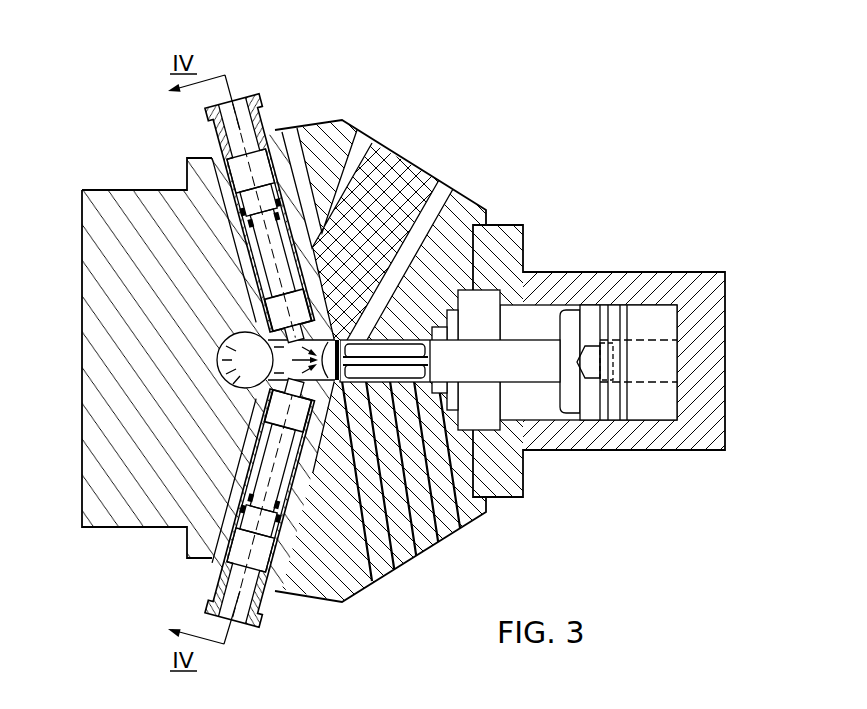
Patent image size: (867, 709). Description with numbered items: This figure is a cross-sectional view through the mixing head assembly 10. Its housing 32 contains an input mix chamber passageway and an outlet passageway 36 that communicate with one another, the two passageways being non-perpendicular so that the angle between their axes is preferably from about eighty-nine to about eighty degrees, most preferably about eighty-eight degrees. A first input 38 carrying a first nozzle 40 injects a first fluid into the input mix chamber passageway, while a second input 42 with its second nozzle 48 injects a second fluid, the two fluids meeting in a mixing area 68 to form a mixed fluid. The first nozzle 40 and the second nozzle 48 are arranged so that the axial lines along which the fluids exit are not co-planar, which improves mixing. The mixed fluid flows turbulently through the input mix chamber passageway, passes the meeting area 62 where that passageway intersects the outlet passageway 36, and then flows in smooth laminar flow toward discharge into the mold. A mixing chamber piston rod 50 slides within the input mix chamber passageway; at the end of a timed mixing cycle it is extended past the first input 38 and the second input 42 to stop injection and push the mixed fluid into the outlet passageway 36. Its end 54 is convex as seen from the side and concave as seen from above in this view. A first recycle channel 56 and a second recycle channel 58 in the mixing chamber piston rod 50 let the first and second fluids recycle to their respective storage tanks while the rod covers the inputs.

The pump unit 10 is at (608, 138).
The housing 32 is at (398, 150).
The output passageway 36 is at (240, 355).
The first input 38 is at (390, 347).
The first nozzle 40 is at (212, 248).
The second input 42 is at (328, 405).
The second nozzle 48 is at (186, 583).
The mixing chamber piston rod 50 is at (537, 372).
The end 54 is at (441, 488).
The first recycle channel 56 is at (393, 340).
The second recycle channel 58 is at (453, 505).
The meeting area 62 is at (262, 398).
The mixing area 68 is at (390, 287).